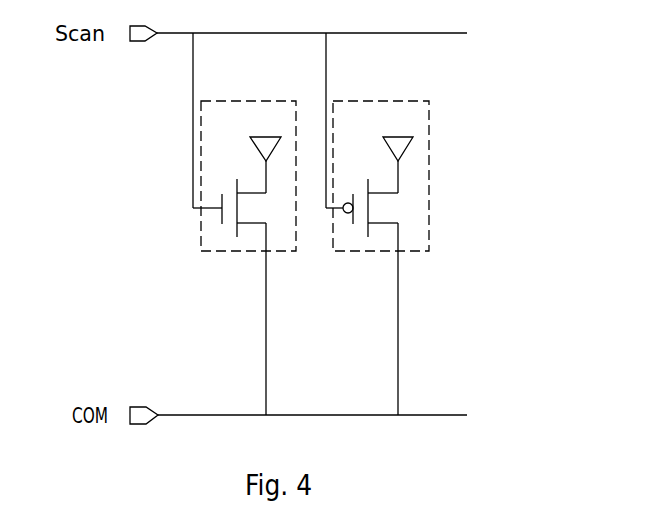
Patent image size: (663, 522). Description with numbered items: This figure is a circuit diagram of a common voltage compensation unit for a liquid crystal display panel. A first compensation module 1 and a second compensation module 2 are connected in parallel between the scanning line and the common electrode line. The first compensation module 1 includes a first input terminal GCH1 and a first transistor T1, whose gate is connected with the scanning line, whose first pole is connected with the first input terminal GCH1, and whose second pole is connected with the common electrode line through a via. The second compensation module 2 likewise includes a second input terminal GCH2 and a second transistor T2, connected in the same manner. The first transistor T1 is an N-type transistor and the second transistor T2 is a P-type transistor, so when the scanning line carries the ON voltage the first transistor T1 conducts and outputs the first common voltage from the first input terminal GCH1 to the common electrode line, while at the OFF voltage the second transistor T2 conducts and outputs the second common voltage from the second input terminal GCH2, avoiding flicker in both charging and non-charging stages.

The first compensation module 1 is at (216, 224).
The second compensation module 2 is at (418, 224).
The first transistor T1 is at (241, 197).
The second transistor T2 is at (373, 197).
The first input terminal GCH1 is at (265, 151).
The second input terminal GCH2 is at (397, 151).